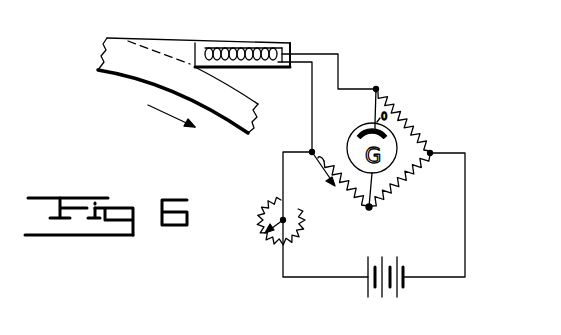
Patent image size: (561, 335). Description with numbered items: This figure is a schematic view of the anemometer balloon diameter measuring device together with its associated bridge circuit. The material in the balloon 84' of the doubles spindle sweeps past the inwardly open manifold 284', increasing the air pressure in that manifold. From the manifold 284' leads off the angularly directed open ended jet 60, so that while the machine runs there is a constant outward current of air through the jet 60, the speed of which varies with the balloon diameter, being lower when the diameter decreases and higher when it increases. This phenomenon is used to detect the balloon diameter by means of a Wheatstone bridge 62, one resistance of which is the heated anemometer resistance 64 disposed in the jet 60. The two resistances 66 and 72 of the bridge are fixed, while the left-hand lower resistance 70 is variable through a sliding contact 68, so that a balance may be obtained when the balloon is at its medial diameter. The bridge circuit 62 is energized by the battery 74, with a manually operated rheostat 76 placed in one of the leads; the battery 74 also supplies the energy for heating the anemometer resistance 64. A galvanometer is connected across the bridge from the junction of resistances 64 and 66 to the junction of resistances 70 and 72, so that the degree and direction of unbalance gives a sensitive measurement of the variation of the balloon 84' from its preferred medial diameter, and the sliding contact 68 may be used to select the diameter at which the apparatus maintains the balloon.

The angularly directed open ended jet 60 is at (220, 44).
The heated anemometer resistance 64 is at (266, 46).
The Wheatstone bridge 62 is at (407, 90).
The fixed resistance 66 is at (422, 137).
The sliding contact 68 is at (310, 180).
The variable resistance 70 is at (352, 203).
The fixed resistance 72 is at (409, 188).
The battery 74 is at (405, 288).
The manually operated rheostat 76 is at (273, 243).
The balloon 84' is at (153, 125).
The inwardly open manifold 284' is at (194, 103).